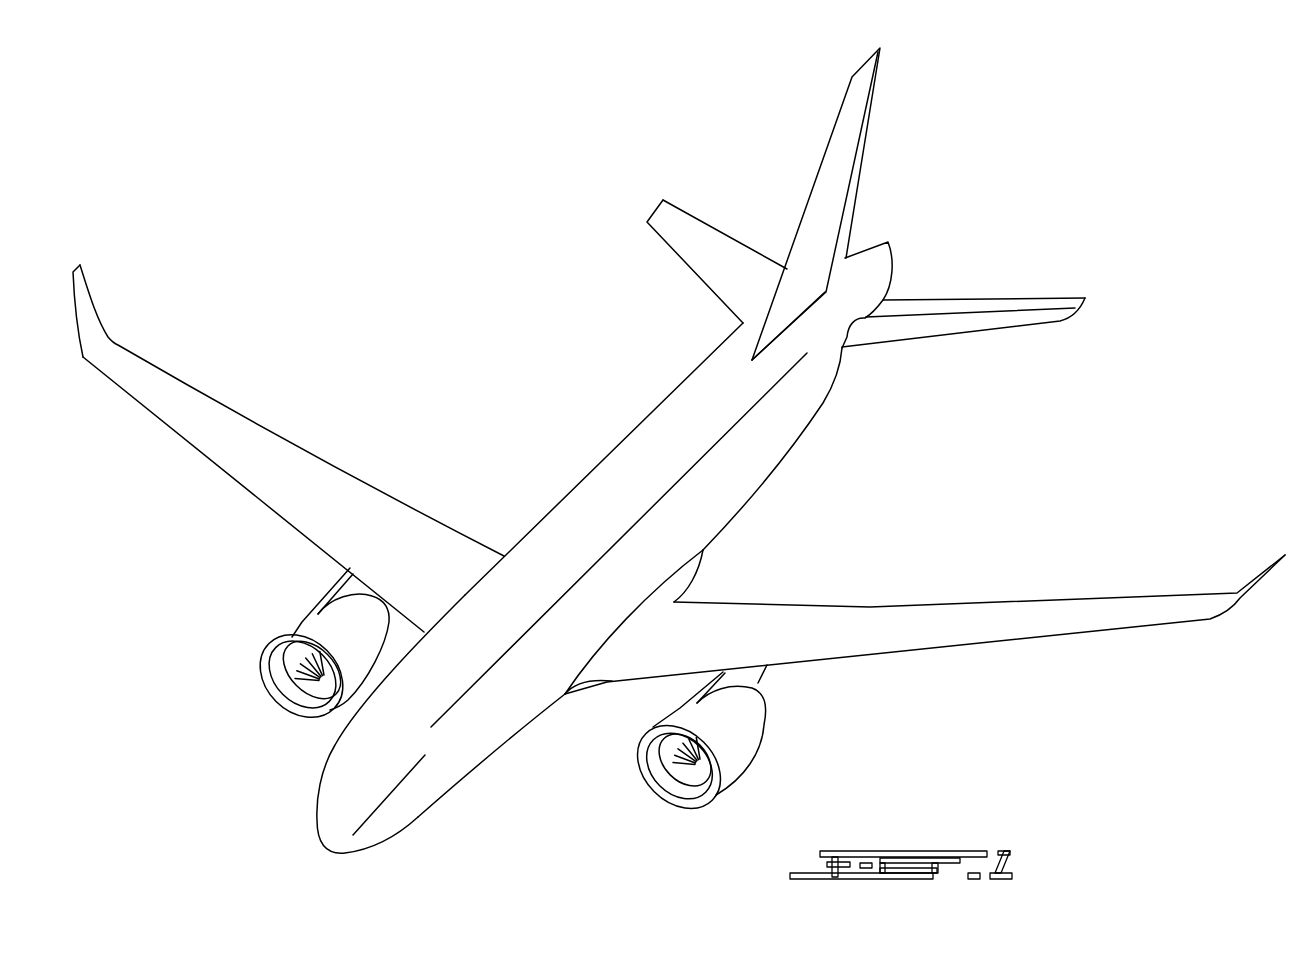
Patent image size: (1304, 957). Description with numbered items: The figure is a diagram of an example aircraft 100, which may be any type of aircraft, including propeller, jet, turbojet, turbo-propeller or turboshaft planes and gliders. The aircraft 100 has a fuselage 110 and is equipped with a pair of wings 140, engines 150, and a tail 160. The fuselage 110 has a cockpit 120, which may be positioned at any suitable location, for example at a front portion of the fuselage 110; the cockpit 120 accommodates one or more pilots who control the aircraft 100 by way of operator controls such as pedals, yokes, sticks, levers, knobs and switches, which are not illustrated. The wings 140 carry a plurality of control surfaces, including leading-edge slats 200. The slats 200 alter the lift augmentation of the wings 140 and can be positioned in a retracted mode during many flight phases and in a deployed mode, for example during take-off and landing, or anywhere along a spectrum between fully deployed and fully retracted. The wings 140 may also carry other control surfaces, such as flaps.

The aircraft 100 is at (679, 453).
The fuselage 110 is at (753, 473).
The cockpit 120 is at (328, 852).
The wings 140 is at (348, 507).
The engines 150 is at (307, 632).
The tail 160 is at (848, 193).
The leading-edge slats 200 is at (857, 689).